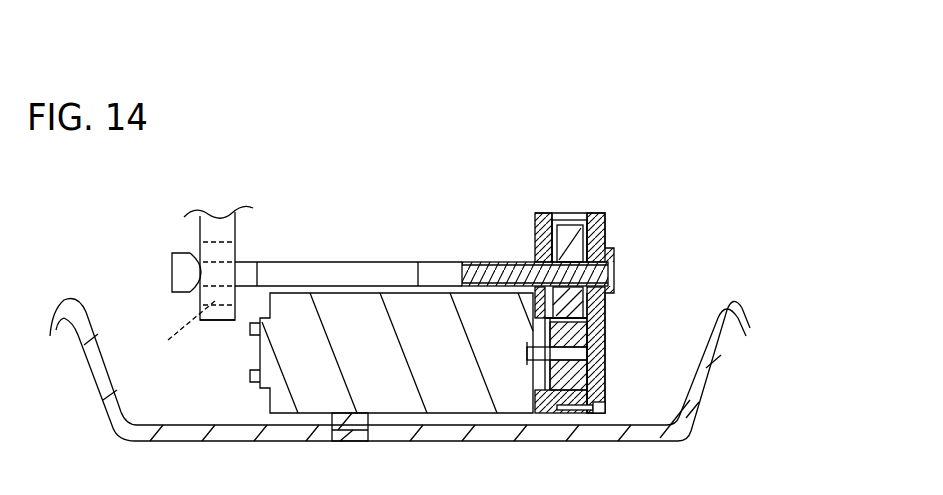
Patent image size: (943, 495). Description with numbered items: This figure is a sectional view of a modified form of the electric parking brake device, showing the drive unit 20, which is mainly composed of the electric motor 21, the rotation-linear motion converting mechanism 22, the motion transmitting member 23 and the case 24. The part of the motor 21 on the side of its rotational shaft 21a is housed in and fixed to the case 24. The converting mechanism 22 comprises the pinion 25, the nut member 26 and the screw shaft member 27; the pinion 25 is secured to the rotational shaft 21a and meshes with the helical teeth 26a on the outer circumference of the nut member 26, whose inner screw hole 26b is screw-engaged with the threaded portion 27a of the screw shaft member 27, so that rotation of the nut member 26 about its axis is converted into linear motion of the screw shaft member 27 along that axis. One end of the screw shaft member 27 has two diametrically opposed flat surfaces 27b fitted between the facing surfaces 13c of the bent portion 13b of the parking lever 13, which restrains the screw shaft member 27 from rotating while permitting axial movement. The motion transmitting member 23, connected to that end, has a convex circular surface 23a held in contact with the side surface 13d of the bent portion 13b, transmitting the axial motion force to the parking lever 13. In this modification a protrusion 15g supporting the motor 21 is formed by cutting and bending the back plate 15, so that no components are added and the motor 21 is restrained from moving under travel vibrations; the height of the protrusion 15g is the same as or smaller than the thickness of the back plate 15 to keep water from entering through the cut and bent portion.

The parking lever 13 is at (237, 224).
The bent portion 13b is at (208, 321).
The facing surfaces 13c is at (174, 337).
The side surface 13d is at (197, 252).
The back plate 15 is at (704, 371).
The protrusion 15g is at (348, 429).
The drive unit 20 is at (435, 215).
The electric motor 21 is at (318, 404).
The rotational shaft 21a is at (581, 352).
The rotation-linear motion converting mechanism 22 is at (662, 257).
The motion transmitting member 23 is at (178, 266).
The circular surface 23a is at (193, 294).
The case 24 is at (607, 231).
The pinion 25 is at (583, 335).
The nut member 26 is at (576, 310).
The helical teeth 26a is at (575, 225).
The screw hole 26b is at (558, 220).
The screw shaft member 27 is at (594, 271).
The threaded portion 27a is at (493, 261).
The flat surfaces 27b is at (246, 270).